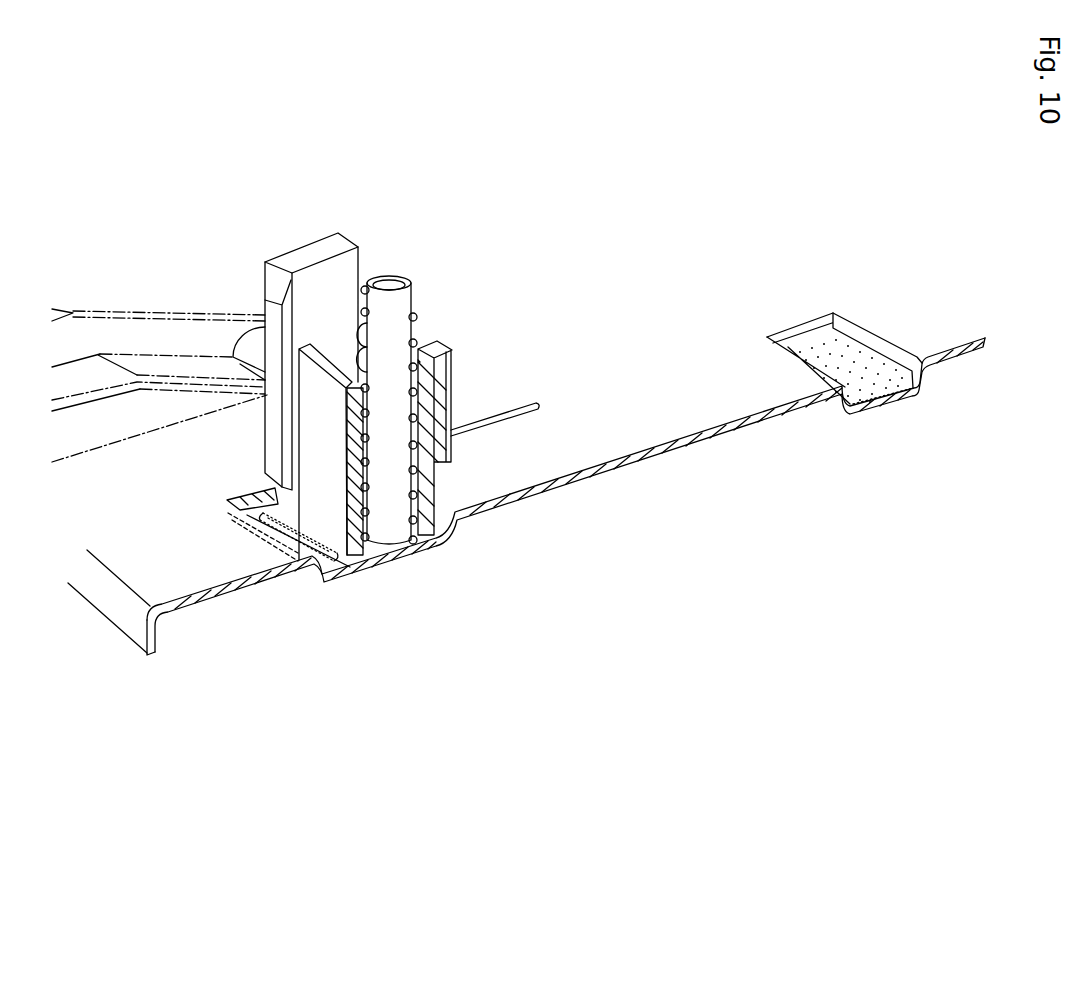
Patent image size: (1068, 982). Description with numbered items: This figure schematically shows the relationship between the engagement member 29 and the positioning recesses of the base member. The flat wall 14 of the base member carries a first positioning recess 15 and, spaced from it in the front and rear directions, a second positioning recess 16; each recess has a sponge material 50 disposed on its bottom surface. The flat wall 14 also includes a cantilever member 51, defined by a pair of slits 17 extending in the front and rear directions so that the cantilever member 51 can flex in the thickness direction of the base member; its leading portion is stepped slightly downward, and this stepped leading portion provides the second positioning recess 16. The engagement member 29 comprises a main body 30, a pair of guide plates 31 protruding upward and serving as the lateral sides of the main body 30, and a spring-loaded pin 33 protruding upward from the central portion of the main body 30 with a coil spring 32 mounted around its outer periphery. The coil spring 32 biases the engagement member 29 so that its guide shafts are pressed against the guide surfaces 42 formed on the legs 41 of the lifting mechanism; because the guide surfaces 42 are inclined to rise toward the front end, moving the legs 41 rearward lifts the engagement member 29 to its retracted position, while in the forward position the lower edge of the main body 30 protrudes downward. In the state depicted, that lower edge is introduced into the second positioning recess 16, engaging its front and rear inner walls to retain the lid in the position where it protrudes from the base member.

The flat wall 14 is at (526, 462).
The first positioning recess 15 is at (873, 342).
The second positioning recess 16 is at (337, 570).
The slits 17 is at (502, 415).
The engagement member 29 is at (396, 248).
The main body 30 is at (320, 512).
The guide plates 31 is at (302, 253).
The coil spring 32 is at (418, 316).
The spring-loaded pin 33 is at (398, 307).
The legs 41 is at (150, 330).
The guide surfaces 42 is at (180, 367).
The sponge material 50 is at (293, 510).
The cantilever member 51 is at (530, 452).